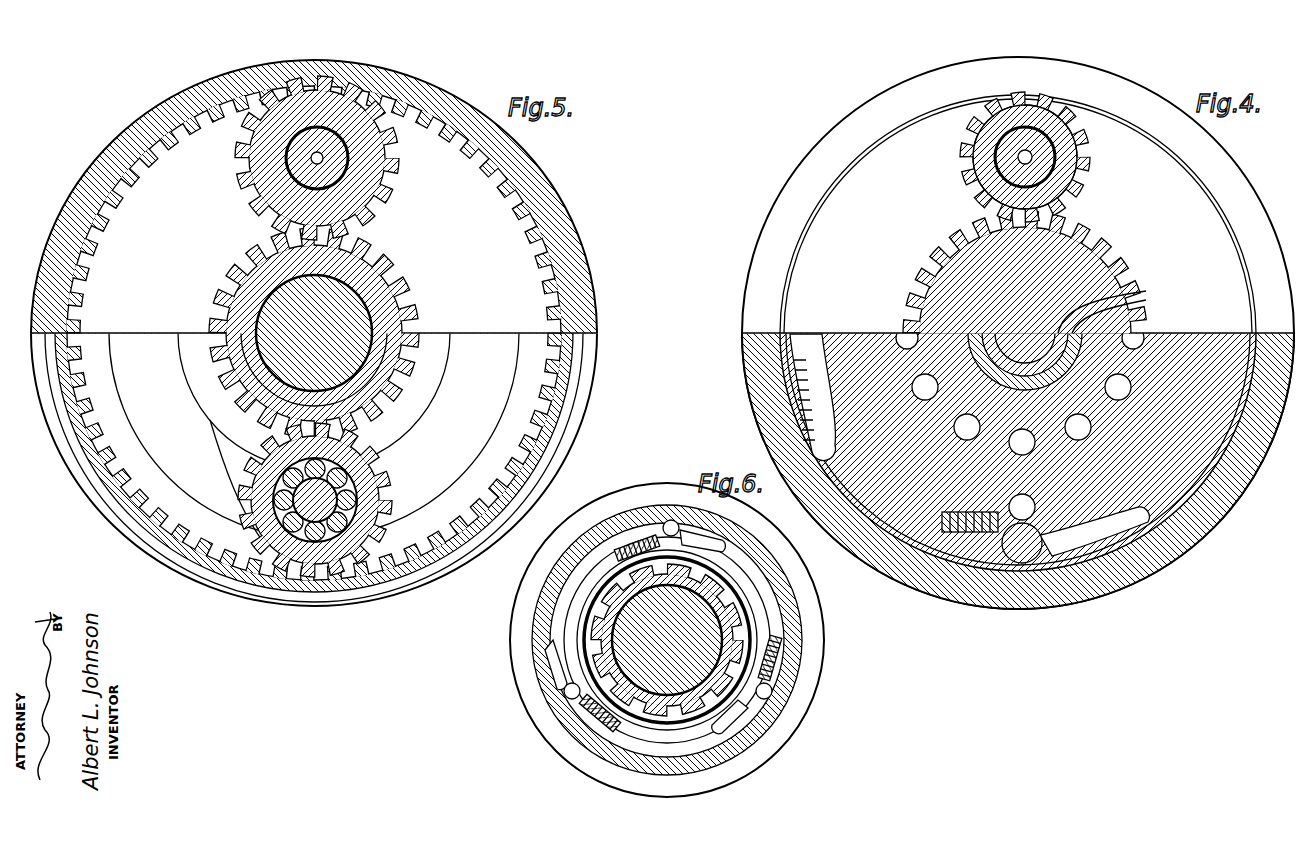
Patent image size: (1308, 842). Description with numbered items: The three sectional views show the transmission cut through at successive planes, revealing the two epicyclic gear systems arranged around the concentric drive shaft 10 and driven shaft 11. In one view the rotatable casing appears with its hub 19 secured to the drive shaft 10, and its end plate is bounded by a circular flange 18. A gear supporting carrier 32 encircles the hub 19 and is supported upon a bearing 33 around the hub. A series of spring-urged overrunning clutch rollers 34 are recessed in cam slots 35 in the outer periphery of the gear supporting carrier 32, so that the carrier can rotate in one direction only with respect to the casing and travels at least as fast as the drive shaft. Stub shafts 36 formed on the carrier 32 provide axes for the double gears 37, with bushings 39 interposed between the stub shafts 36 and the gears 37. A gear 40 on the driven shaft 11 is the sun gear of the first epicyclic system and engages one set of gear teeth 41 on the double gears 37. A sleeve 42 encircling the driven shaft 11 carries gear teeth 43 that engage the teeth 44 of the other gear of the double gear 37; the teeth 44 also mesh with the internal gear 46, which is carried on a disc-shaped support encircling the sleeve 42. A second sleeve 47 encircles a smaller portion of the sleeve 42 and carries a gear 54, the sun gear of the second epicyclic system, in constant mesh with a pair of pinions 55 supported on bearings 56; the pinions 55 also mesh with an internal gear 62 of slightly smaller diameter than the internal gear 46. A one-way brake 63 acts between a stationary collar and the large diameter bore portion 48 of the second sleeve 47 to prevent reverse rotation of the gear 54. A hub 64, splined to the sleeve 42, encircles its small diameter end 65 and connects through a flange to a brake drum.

In FIG. 4, the drive shaft 10 is at (1147, 291).
In FIG. 5, the driven shaft 11 is at (323, 326).
In FIG. 6, the driven shaft 11 is at (722, 642).
In FIG. 4, the circular flange 18 is at (1197, 533).
In FIG. 4, the hub 19 is at (1146, 302).
In FIG. 4, the gear supporting carrier 32 is at (1202, 490).
In FIG. 4, the bearing 33 is at (903, 312).
In FIG. 4, the overrunning clutch rollers 34 is at (1052, 565).
In FIG. 4, the cam slots 35 is at (1105, 528).
In FIG. 5, the stub shafts 36 is at (290, 158).
In FIG. 4, the stub shafts 36 is at (1048, 160).
In FIG. 5, the double gears 37 is at (368, 92).
In FIG. 4, the double gears 37 is at (1078, 178).
In FIG. 5, the bushings 39 is at (300, 170).
In FIG. 4, the gear 40 is at (1130, 272).
In FIG. 4, the gear teeth 41 is at (1080, 148).
In FIG. 5, the sleeve 42 is at (228, 318).
In FIG. 5, the gear teeth 43 is at (222, 296).
In FIG. 5, the teeth 44 is at (340, 80).
In FIG. 5, the internal gear 46 is at (416, 90).
In FIG. 5, the second sleeve 47 is at (395, 372).
In FIG. 6, the large diameter bore portion 48 is at (762, 708).
In FIG. 5, the gear 54 is at (212, 412).
In FIG. 5, the pinions 55 is at (248, 470).
In FIG. 5, the bearings 56 is at (258, 490).
In FIG. 5, the internal gear 62 is at (230, 576).
In FIG. 6, the one-way brake 63 is at (774, 692).
In FIG. 6, the hub 64 is at (740, 603).
In FIG. 6, the small diameter end 65 is at (748, 620).